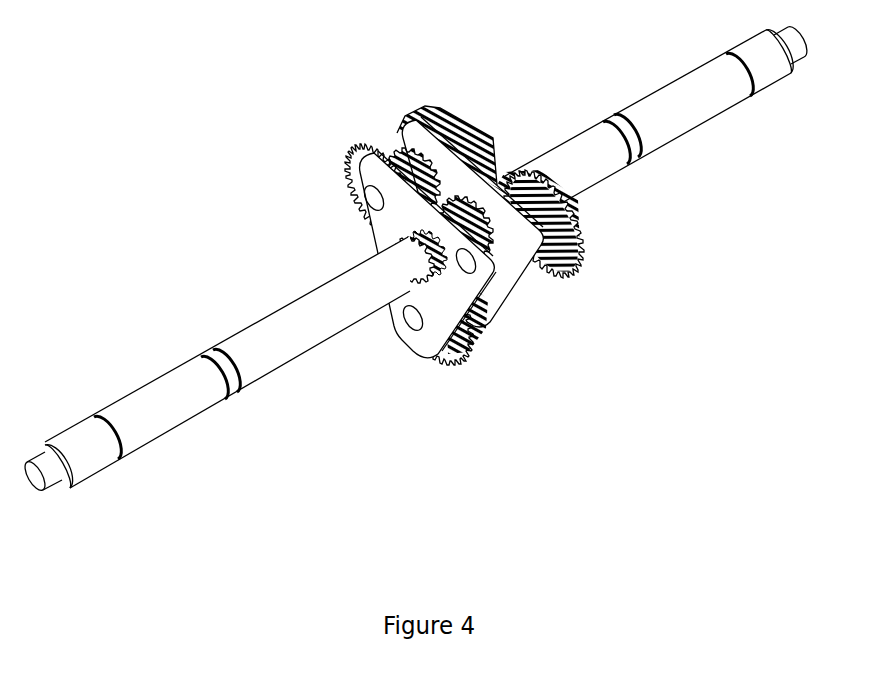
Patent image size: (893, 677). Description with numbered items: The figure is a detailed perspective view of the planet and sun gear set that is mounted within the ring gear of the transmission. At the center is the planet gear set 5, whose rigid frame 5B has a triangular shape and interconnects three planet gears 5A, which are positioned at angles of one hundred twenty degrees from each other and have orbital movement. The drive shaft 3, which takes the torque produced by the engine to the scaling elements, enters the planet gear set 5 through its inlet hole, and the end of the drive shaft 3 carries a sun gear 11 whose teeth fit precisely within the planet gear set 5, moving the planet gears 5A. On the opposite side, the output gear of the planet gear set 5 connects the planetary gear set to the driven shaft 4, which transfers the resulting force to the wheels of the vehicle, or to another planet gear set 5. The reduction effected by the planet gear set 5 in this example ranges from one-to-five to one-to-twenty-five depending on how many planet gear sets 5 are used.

The drive shaft 3 is at (263, 320).
The driven shaft 4 is at (698, 65).
The planet gear set 5 is at (501, 286).
The planet gears 5A is at (353, 153).
The rigid frame 5B is at (437, 313).
The sun gear 11 is at (388, 245).